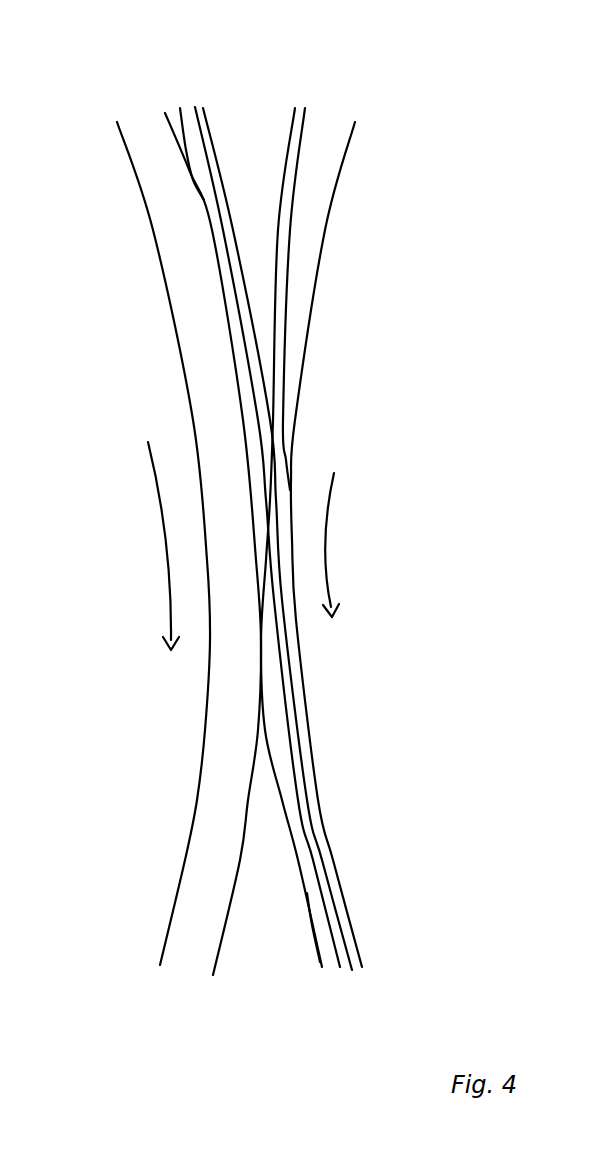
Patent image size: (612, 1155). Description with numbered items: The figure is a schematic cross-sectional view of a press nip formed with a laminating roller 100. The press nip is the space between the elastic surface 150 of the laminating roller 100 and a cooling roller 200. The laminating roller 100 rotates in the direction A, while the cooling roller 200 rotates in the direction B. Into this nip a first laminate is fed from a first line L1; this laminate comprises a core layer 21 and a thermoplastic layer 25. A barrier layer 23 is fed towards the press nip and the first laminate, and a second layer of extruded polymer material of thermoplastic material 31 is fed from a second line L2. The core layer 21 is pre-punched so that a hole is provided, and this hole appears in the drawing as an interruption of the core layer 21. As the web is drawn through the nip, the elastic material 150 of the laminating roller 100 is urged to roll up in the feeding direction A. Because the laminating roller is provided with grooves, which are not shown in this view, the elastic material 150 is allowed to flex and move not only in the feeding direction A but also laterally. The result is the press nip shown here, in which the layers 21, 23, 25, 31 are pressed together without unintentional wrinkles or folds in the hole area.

The laminating roller 100 is at (167, 880).
The elastic surface 150 is at (147, 147).
The cooling roller 200 is at (378, 902).
The extruded polymer material of thermoplastic material 31 is at (307, 108).
The core layer 21 is at (322, 966).
The barrier layer 23 is at (357, 972).
The thermoplastic layer 25 is at (342, 967).
The first line L1 is at (178, 97).
The second line L2 is at (310, 98).
The direction A is at (163, 562).
The direction B is at (335, 562).